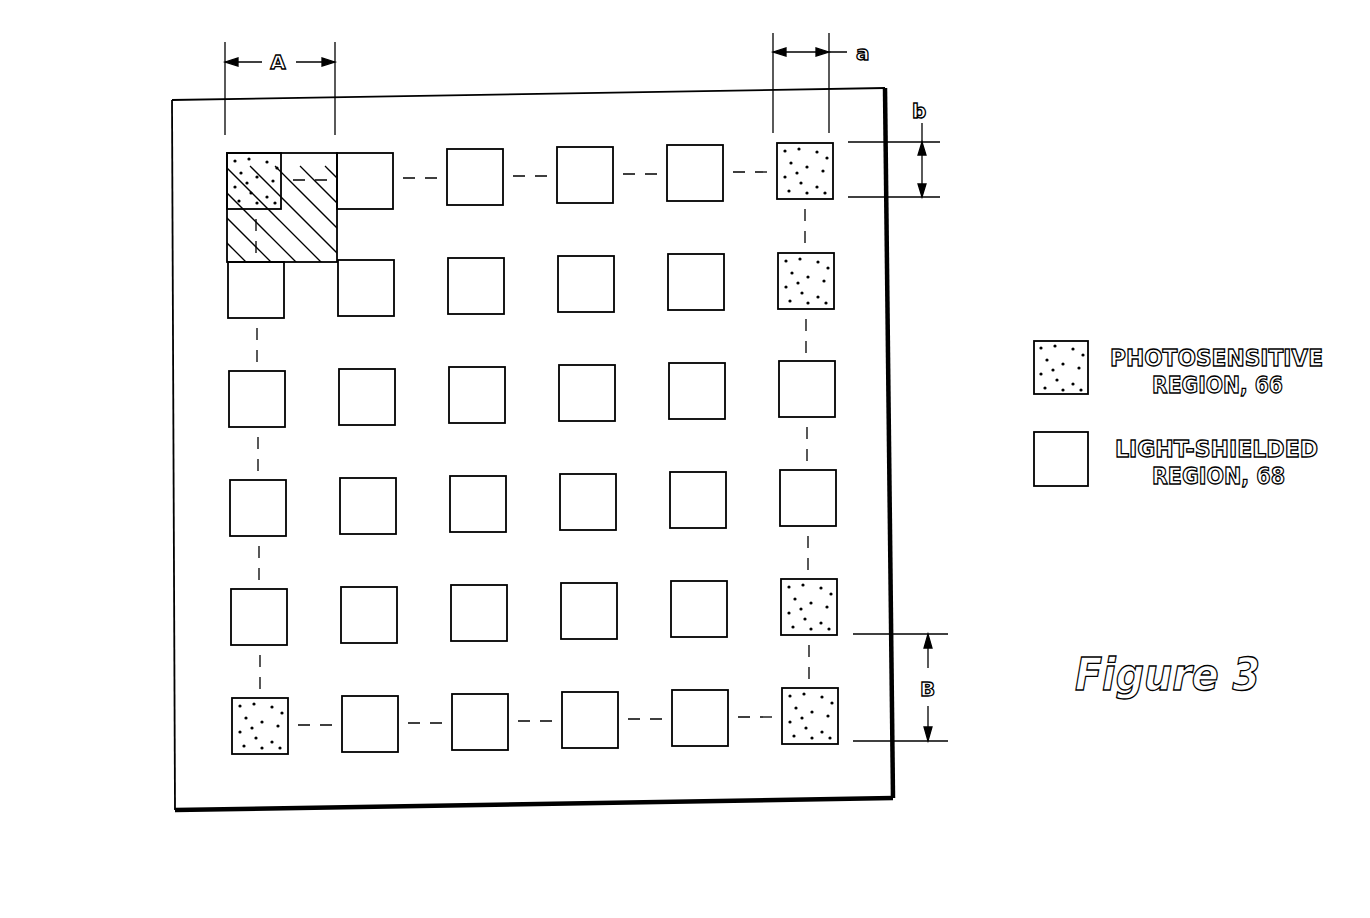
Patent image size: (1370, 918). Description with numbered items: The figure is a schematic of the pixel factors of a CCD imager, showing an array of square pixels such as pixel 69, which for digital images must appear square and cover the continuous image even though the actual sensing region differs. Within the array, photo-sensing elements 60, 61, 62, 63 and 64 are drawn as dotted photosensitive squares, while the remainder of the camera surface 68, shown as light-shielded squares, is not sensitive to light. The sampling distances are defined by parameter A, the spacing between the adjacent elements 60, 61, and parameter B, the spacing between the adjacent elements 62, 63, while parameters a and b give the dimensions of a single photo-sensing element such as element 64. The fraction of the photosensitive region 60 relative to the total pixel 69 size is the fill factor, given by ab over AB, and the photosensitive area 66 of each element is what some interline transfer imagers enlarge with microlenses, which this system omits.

The photo-sensing element 60 is at (227, 182).
The photo-sensing element 61 is at (363, 152).
The photo-sensing element 62 is at (838, 605).
The photo-sensing element 63 is at (810, 743).
The photo-sensing element 64 is at (807, 200).
The photosensitive area 66 is at (833, 280).
The camera surface 68 is at (852, 443).
The pixel 69 is at (339, 283).